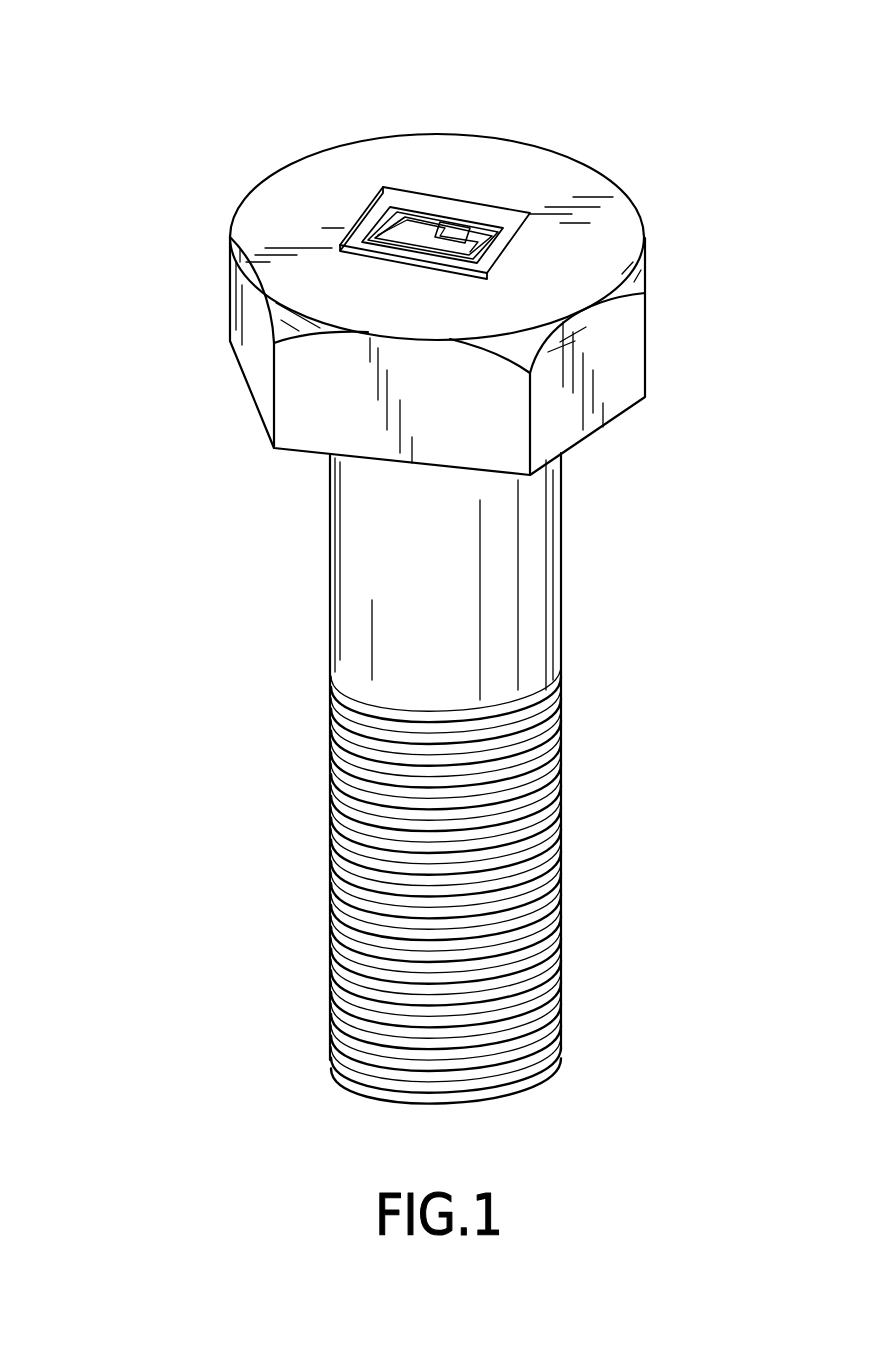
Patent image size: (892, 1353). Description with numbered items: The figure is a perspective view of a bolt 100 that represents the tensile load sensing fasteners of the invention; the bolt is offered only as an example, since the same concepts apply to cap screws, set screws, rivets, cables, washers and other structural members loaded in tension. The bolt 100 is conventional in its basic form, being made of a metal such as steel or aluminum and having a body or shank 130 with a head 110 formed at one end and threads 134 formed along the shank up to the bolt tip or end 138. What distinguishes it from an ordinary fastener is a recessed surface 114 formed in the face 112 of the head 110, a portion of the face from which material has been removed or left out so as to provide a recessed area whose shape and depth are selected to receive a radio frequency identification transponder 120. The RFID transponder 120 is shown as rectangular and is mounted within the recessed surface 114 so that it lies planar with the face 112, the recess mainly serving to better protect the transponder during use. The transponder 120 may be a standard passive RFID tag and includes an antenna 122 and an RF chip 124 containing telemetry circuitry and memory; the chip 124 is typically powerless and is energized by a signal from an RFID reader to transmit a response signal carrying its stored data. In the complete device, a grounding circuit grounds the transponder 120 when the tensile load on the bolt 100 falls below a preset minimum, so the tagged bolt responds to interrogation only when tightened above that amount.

The bolt 100 is at (152, 138).
The head 110 is at (645, 350).
The face 112 is at (613, 223).
The recessed surface 114 is at (368, 223).
The RFID transponder 120 is at (397, 207).
The antenna 122 is at (425, 218).
The RF chip 124 is at (463, 237).
The shank 130 is at (328, 572).
The threads 134 is at (561, 783).
The bolt tip 138 is at (468, 1103).